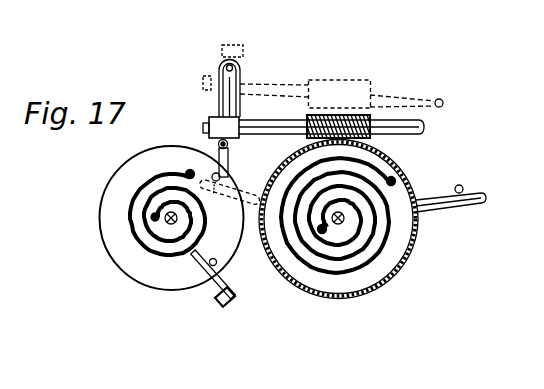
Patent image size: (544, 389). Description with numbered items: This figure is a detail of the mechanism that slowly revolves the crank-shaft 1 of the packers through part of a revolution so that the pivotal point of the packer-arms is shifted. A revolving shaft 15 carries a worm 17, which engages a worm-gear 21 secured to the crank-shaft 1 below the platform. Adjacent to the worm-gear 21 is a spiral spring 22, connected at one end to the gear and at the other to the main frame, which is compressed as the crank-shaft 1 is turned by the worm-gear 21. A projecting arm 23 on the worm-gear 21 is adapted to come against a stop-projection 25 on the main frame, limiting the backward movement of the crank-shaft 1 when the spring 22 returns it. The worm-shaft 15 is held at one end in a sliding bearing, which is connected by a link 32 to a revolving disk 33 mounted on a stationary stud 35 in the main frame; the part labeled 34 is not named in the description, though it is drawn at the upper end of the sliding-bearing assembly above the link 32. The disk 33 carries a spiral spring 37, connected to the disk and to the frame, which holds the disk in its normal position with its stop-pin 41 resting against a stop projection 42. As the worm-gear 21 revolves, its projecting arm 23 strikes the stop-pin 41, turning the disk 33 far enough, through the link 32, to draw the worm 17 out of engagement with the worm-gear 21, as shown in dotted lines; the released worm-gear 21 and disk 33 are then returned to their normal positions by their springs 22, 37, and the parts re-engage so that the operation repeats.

The crank-shaft 1 is at (342, 215).
The revolving shaft 15 is at (406, 127).
The worm 17 is at (336, 118).
The worm-gear 21 is at (411, 250).
The spiral spring 22 is at (303, 262).
The projecting arm 23 is at (485, 197).
The stop-projection 25 is at (462, 187).
The link 32 is at (215, 146).
The revolving disk 33 is at (126, 255).
The piston fork 34 is at (212, 117).
The stationary stud 35 is at (164, 222).
The spiral spring 37 is at (155, 255).
The stop-pin 41 is at (201, 288).
The stop projection 42 is at (242, 291).